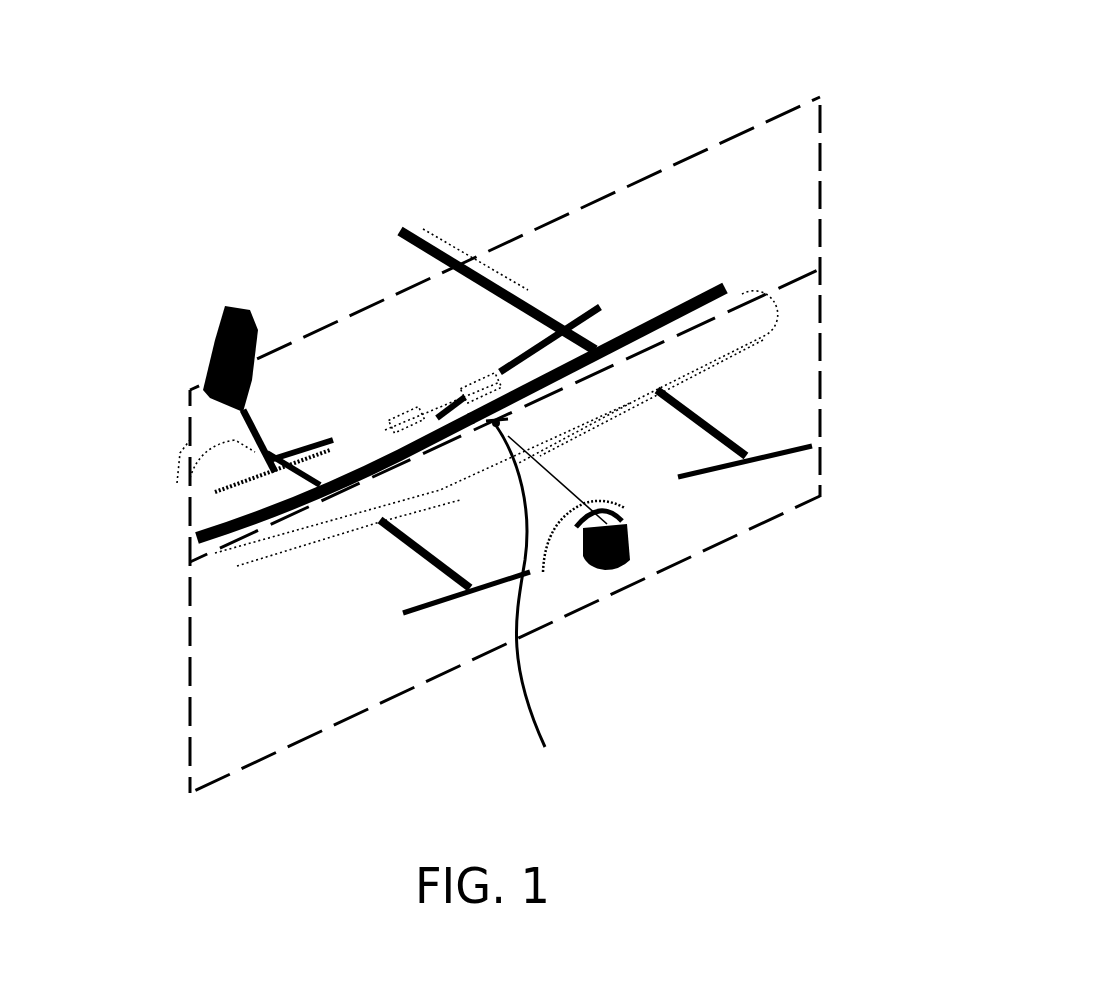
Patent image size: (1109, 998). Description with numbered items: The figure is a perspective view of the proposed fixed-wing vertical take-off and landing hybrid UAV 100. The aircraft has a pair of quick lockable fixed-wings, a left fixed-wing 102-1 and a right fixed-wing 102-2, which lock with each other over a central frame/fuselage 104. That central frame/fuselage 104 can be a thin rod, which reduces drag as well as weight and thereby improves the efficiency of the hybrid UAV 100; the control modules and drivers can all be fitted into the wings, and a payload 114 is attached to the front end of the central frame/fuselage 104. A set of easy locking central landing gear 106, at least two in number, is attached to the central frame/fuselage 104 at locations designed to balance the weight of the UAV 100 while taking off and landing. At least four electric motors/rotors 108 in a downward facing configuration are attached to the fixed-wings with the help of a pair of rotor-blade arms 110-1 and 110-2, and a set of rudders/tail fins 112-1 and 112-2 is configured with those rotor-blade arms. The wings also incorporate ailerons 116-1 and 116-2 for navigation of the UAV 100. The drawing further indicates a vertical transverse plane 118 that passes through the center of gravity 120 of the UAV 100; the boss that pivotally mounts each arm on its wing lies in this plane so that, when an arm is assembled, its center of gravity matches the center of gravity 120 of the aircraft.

The hybrid UAV 100 is at (128, 44).
The left fixed-wing 102-1 is at (781, 290).
The right fixed-wing 102-2 is at (315, 532).
The central frame/fuselage 104 is at (587, 490).
The central landing gear 106 is at (565, 580).
The electric motors/rotors 108 is at (819, 434).
The rotor-blade arm 110-1 is at (724, 410).
The rotor-blade arm 110-2 is at (406, 560).
The rudder/tail fin 112-1 is at (410, 277).
The rudder/tail fin 112-2 is at (192, 495).
The payload 114 is at (655, 551).
The aileron 116-1 is at (667, 296).
The aileron 116-2 is at (228, 511).
The vertical transverse plane 118 is at (573, 445).
The center of gravity 120 is at (524, 598).